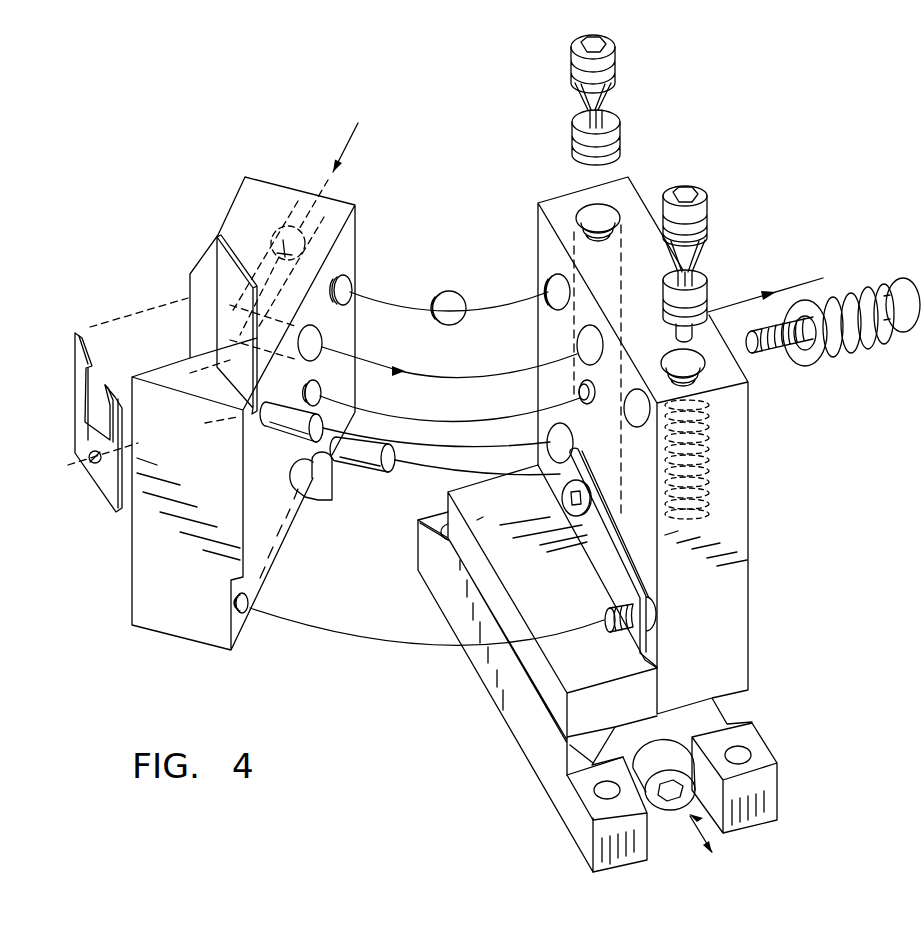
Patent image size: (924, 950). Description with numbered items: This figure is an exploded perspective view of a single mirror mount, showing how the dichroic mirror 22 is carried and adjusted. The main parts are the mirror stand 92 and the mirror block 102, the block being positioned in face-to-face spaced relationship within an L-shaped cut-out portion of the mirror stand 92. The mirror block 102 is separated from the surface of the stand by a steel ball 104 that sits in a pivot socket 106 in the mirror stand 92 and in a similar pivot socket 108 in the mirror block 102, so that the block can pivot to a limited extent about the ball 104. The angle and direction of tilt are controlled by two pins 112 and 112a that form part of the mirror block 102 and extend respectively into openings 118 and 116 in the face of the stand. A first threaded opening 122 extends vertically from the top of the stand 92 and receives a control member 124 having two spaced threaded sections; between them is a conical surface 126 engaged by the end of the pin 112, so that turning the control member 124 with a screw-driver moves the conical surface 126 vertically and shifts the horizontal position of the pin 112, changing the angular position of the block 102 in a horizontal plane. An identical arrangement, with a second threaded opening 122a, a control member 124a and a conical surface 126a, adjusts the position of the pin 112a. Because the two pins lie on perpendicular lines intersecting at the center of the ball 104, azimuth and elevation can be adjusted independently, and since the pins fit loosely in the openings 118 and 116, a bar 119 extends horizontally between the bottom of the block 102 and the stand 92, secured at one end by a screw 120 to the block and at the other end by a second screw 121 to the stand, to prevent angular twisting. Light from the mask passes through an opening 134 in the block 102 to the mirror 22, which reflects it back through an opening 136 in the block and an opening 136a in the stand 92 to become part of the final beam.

The mirror 22 is at (217, 256).
The mirror stand 92 is at (752, 618).
The mirror block 102 is at (183, 641).
The steel ball 104 is at (450, 290).
The pivot socket 106 is at (552, 278).
The pivot socket 108 is at (344, 277).
The pin 112 is at (287, 437).
The pin 112a is at (375, 474).
The opening 116 is at (552, 425).
The opening 118 is at (637, 428).
The bar 119 is at (602, 578).
The screw 120 is at (612, 627).
The second screw 121 is at (563, 498).
The first threaded opening 122 is at (705, 368).
The second threaded opening 122a is at (583, 207).
The control member 124 is at (708, 199).
The control member 124a is at (617, 56).
The conical surface 126 is at (702, 250).
The conical surface 126a is at (612, 98).
The opening 134 is at (279, 226).
The opening 136 is at (322, 341).
The opening 136a is at (577, 347).